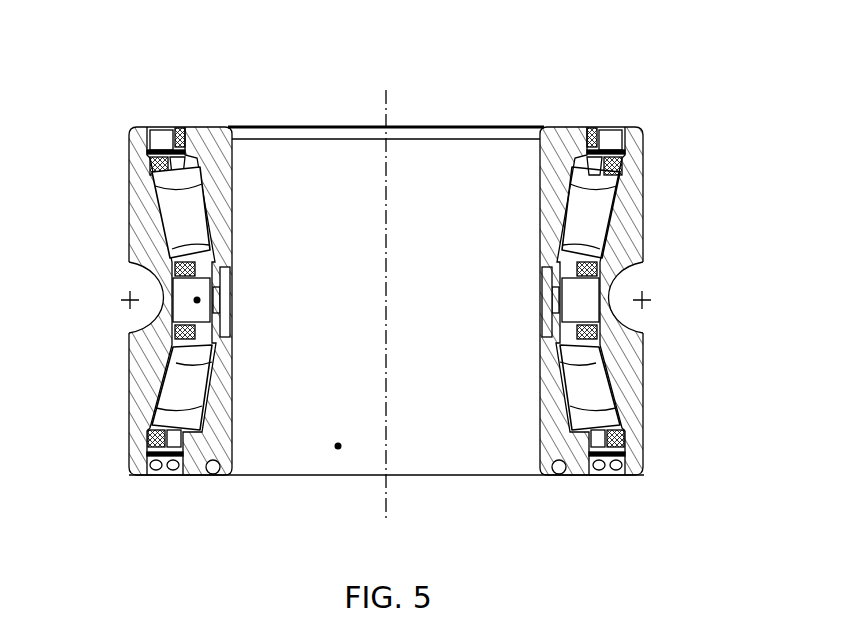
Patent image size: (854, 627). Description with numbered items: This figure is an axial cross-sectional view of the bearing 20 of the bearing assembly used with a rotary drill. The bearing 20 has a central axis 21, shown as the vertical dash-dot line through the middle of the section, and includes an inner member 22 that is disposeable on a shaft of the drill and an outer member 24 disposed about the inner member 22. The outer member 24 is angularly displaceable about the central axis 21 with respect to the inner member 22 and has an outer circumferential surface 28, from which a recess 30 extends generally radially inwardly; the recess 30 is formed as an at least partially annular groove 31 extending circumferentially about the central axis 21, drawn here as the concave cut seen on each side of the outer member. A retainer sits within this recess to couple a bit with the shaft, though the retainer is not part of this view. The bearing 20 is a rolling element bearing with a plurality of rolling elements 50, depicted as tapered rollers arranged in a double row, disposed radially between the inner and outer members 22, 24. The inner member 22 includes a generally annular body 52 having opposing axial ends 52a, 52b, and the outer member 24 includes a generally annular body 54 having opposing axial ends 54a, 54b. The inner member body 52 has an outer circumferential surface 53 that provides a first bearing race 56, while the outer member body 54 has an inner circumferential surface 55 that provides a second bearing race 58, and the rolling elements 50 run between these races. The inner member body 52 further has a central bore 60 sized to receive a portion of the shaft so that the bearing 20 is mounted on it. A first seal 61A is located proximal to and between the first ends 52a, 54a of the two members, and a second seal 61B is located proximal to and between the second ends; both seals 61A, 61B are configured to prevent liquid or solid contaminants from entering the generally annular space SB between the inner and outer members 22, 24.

The bearing 20 is at (97, 270).
The central axis 21 is at (388, 105).
The inner member 22 is at (236, 423).
The outer member 24 is at (632, 233).
The outer circumferential surface 28 is at (644, 412).
The recess 30 is at (636, 318).
The annular groove 31 is at (140, 305).
The rolling elements 50 is at (200, 218).
The inner member body 52 is at (222, 172).
The first axial end of inner member body 52a is at (568, 126).
The second axial end of inner member body 52b is at (570, 478).
The outer circumferential surface of inner member body 53 is at (198, 407).
The outer member body 54 is at (140, 230).
The first axial end of outer member body 54a is at (633, 126).
The second axial end of outer member body 54b is at (634, 478).
The inner circumferential surface of outer member body 55 is at (176, 365).
The first bearing race 56 is at (200, 188).
The second bearing race 58 is at (180, 258).
The central bore 60 is at (338, 446).
The first seal 61A is at (152, 126).
The second seal 61B is at (162, 481).
The annular space SB is at (200, 300).